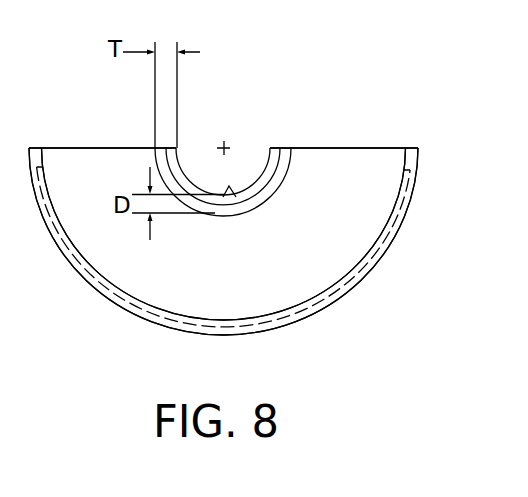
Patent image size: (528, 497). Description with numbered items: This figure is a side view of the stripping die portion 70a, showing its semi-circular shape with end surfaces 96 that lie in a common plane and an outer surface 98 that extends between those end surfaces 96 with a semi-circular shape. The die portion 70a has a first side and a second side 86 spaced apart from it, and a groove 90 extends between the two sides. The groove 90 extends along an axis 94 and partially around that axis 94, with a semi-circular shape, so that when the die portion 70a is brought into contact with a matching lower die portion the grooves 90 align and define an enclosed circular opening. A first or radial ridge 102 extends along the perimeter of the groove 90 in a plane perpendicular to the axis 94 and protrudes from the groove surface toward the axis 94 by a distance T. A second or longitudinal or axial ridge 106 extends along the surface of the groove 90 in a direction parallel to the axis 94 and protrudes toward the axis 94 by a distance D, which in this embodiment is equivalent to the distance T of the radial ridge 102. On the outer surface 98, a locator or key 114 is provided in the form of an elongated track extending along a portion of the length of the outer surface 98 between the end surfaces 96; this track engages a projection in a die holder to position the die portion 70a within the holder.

The die portion 70a is at (86, 329).
The second side 86 is at (326, 270).
The groove 90 is at (272, 196).
The axis 94 is at (224, 142).
The end surfaces 96 is at (95, 148).
The outer surface 98 is at (421, 158).
The radial ridge 102 is at (203, 192).
The axial ridge 106 is at (230, 187).
The key 114 is at (399, 219).